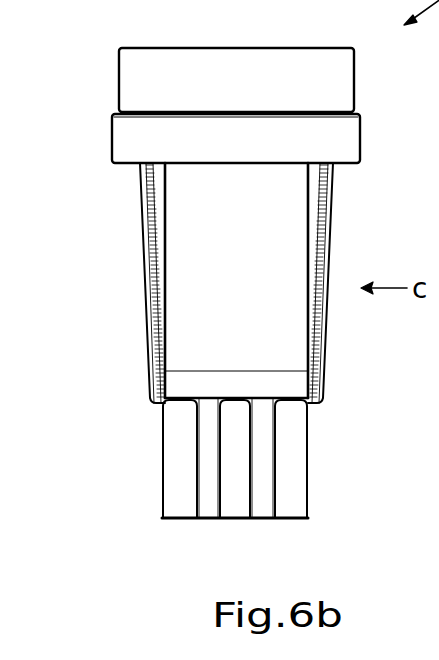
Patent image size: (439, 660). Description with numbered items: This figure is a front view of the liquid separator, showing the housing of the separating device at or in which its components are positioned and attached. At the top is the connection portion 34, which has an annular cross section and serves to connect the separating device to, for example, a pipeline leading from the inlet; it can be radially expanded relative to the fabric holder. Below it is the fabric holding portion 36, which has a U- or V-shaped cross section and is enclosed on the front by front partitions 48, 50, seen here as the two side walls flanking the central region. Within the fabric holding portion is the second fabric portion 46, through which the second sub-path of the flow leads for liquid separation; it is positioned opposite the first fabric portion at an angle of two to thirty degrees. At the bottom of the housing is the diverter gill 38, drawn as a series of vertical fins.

The connection portion 34 is at (258, 70).
The fabric holding portion 36 is at (244, 258).
The diverter gill 38 is at (285, 493).
The second fabric portion 46 is at (268, 363).
The front partition 48 is at (148, 257).
The front partition 50 is at (321, 245).